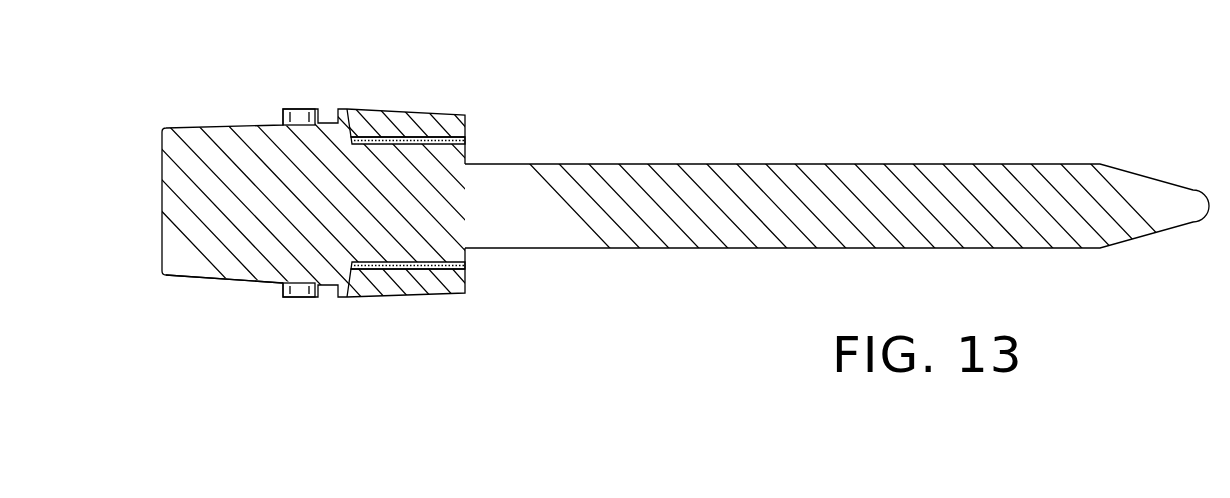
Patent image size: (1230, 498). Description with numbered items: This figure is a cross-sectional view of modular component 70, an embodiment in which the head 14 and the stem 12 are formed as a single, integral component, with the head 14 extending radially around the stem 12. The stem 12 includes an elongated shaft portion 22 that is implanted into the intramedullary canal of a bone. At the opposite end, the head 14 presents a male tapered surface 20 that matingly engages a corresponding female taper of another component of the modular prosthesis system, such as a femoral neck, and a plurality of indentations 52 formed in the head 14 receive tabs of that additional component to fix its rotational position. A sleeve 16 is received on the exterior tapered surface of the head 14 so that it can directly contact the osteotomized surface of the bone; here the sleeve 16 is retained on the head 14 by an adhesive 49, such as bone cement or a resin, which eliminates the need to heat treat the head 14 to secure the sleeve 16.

The modular component 70 is at (819, 73).
The head 14 is at (232, 86).
The stem 12 is at (663, 116).
The shaft portion 22 is at (720, 175).
The sleeve 16 is at (406, 86).
The indentations 52 is at (297, 118).
The adhesive 49 is at (440, 268).
The tapered surface 20 is at (213, 278).